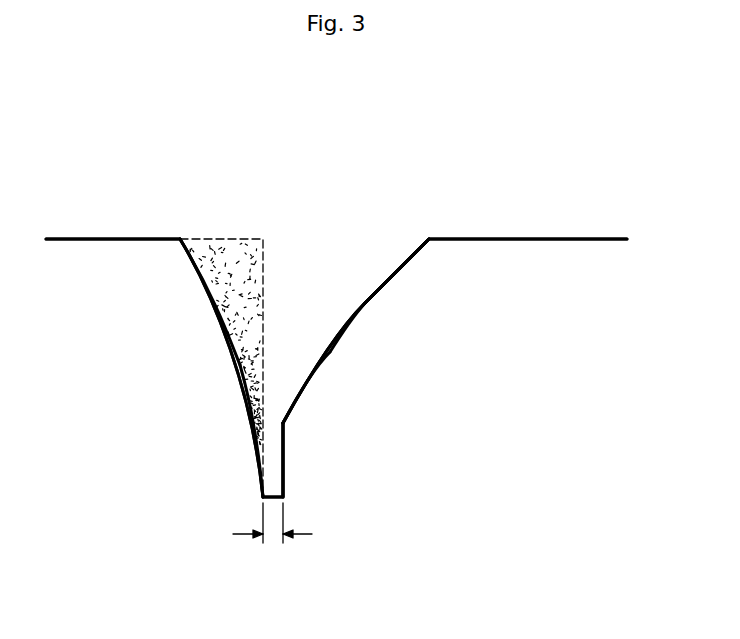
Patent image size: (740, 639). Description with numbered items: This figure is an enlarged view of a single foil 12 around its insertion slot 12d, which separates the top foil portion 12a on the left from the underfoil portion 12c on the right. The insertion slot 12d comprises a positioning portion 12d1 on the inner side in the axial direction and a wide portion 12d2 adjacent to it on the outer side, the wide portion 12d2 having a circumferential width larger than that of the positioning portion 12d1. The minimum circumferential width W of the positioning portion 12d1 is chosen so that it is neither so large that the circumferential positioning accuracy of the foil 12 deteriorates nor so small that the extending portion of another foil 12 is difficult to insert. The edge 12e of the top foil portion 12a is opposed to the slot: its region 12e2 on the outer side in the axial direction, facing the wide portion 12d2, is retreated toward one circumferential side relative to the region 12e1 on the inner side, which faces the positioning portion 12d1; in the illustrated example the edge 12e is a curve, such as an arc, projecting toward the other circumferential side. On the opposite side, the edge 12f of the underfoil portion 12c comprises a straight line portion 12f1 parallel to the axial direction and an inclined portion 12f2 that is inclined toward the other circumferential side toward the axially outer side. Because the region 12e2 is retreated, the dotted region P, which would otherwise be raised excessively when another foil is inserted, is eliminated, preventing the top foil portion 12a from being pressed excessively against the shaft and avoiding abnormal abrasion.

The foil 12 is at (488, 181).
The top foil portion 12a is at (93, 262).
The underfoil portion 12c is at (544, 262).
The insertion slot 12d is at (447, 332).
The positioning portion 12d1 is at (272, 462).
The wide portion 12d2 is at (302, 312).
The edge of the top foil portion 12e is at (205, 281).
The region on the inner side in the axial direction 12e1 is at (258, 449).
The region on the outer side in the axial direction 12e2 is at (222, 323).
The edge of the underfoil portion 12f is at (402, 264).
The straight line portion 12f1 is at (282, 480).
The inclined portion 12f2 is at (377, 287).
The dotted region P is at (243, 262).
The circumferential width W is at (271, 537).